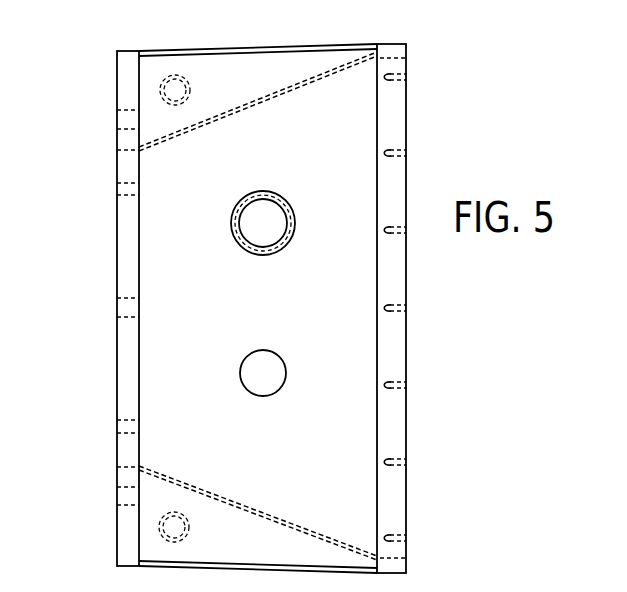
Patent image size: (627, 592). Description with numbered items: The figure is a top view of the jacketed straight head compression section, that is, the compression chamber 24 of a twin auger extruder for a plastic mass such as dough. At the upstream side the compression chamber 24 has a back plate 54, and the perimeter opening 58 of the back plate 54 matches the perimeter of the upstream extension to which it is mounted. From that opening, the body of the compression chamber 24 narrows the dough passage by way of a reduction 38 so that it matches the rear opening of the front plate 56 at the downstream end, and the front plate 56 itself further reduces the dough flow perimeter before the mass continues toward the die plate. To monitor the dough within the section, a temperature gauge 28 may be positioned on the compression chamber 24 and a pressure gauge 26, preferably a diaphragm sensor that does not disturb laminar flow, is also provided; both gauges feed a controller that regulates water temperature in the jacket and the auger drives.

The compression chamber 24 is at (274, 308).
The pressure gauge 26 is at (263, 238).
The temperature gauge 28 is at (283, 380).
The reduction 38 is at (176, 137).
The back plate 54 is at (91, 308).
The front plate 56 is at (406, 122).
The perimeter opening 58 is at (127, 150).